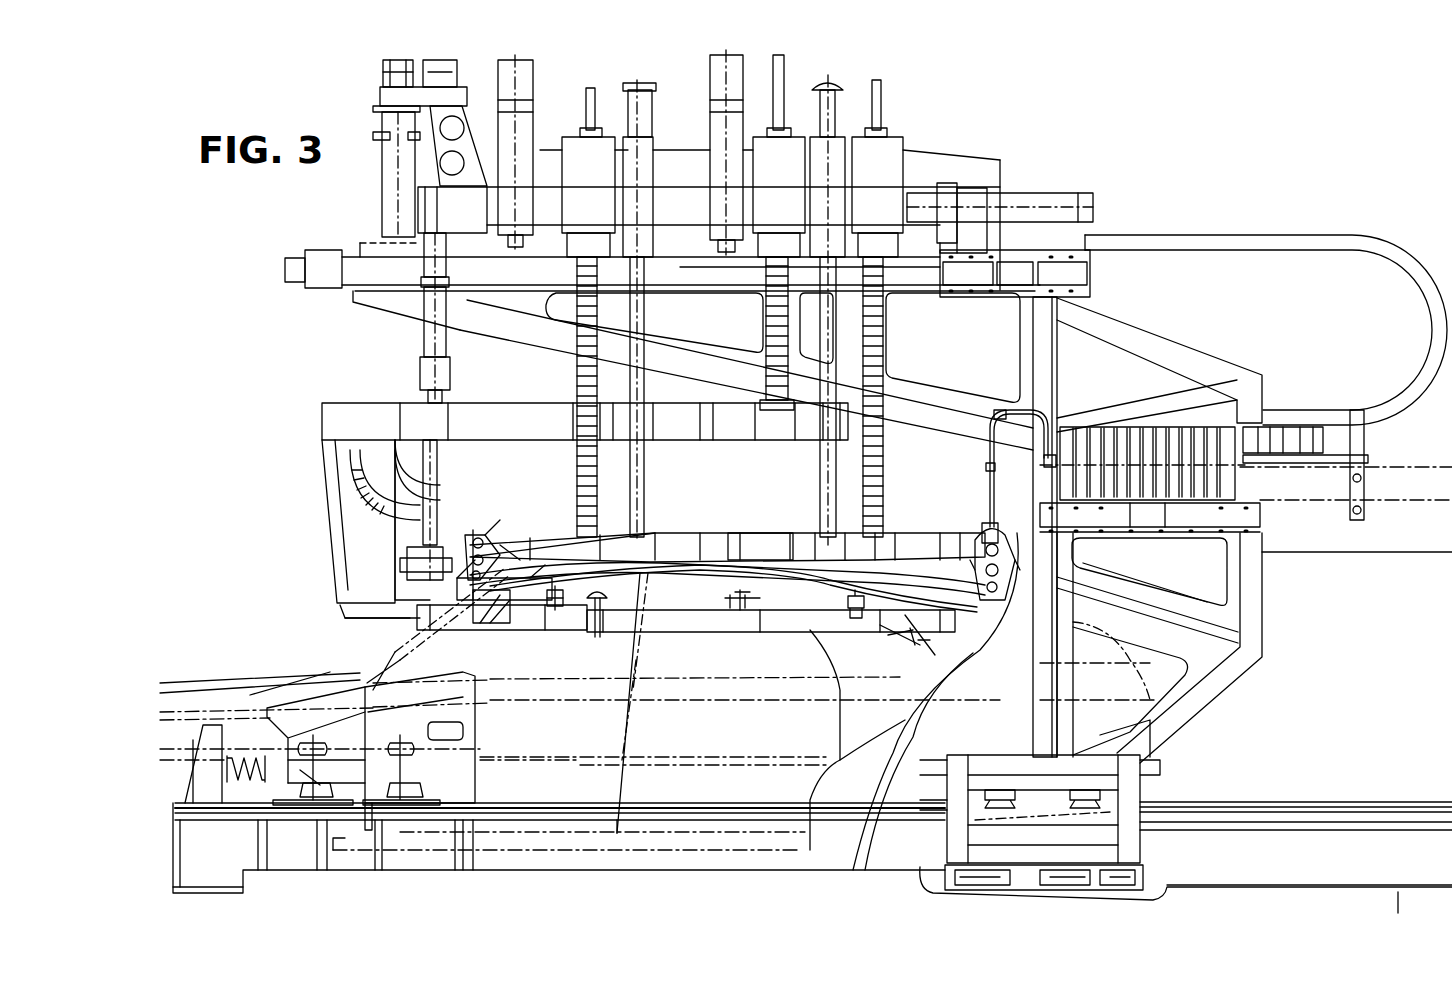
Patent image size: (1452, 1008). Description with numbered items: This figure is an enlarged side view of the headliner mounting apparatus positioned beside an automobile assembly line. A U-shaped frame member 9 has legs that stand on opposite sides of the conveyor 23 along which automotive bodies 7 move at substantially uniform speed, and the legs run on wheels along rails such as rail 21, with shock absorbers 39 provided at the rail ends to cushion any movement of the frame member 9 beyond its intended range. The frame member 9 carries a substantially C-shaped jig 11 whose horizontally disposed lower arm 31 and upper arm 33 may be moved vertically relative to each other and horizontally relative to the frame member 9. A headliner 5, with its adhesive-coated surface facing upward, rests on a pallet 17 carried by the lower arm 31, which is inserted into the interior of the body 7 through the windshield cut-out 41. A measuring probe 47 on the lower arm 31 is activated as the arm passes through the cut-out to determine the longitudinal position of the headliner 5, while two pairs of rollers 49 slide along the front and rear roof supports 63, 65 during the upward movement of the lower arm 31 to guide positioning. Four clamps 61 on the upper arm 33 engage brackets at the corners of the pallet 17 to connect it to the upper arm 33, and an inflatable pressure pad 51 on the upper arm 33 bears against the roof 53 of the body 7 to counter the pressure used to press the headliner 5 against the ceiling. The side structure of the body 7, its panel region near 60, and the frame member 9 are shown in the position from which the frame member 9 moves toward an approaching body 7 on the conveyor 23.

The headliner 5 is at (720, 537).
The automotive body 7 is at (187, 680).
The frame member 9 is at (460, 793).
The jig 11 is at (318, 348).
The pallet 17 is at (707, 592).
The rail 21 is at (1262, 868).
The conveyor 23 is at (1208, 798).
The lower arm 31 is at (587, 620).
The upper arm 33 is at (683, 537).
The shock absorber 39 is at (236, 810).
The window cut-out 41 is at (373, 640).
The measuring probe 47 is at (500, 530).
The rollers 49 is at (495, 630).
The inflatable pressure pad 51 is at (760, 557).
The roof 53 is at (547, 563).
The body side panel 60 is at (975, 650).
The clamps 61 is at (457, 547).
The front roof support 63 is at (443, 630).
The rear roof support 65 is at (910, 643).